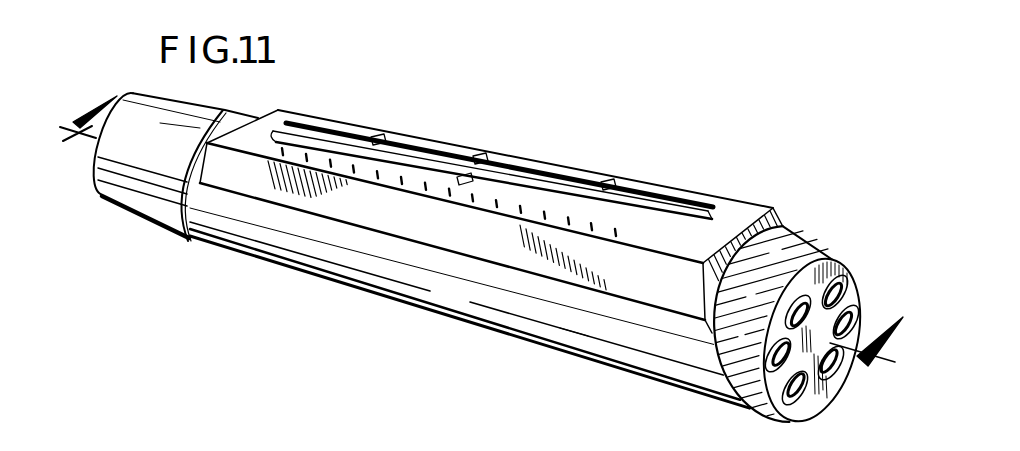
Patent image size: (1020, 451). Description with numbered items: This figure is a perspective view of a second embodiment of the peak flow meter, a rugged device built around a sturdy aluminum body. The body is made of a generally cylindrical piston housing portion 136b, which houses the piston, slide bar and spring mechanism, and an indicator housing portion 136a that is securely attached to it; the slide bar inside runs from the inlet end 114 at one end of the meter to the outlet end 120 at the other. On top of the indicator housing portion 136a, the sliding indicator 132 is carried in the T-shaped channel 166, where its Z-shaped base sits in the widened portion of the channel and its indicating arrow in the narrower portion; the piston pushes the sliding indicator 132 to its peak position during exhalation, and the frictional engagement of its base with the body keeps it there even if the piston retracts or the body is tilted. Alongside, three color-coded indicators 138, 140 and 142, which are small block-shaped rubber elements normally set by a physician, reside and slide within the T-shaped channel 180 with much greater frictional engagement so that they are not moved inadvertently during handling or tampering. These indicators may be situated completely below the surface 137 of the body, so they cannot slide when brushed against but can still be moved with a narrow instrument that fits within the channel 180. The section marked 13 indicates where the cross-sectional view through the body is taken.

The section line 13- 13 is at (472, 249).
The inlet end 114 is at (99, 193).
The outlet end 120 is at (818, 400).
The sliding indicator 132 is at (464, 186).
The indicator housing portion 136a is at (280, 107).
The piston housing portion 136b is at (228, 228).
The surface of the body 137 is at (740, 210).
The color-coded indicator 138 is at (608, 182).
The color-coded indicator 140 is at (481, 156).
The color-coded indicator 142 is at (378, 138).
The T-shaped channel 166 is at (668, 228).
The T-shaped channel 180 is at (694, 200).